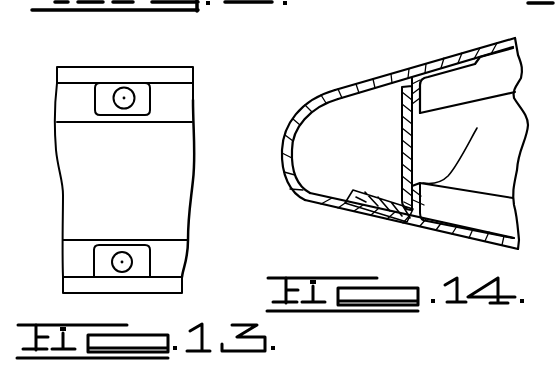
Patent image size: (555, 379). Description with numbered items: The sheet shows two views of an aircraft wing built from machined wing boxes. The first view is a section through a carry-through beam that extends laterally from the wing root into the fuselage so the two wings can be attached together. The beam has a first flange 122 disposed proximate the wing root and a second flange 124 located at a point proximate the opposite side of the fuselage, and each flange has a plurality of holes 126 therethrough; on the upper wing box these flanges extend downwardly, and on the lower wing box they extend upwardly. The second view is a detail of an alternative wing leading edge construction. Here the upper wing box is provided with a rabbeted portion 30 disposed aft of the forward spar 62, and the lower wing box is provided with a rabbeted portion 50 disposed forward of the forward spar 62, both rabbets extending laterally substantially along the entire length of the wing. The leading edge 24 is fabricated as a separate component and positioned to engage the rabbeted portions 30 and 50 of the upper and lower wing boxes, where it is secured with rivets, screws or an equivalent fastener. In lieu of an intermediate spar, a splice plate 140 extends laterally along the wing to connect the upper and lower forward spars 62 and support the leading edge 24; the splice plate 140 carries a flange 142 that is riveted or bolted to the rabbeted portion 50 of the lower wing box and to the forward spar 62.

In FIG. 13, the first flange 122 is at (142, 95).
In FIG. 13, the holes 126 is at (126, 105).
In FIG. 13, the second flange 124 is at (147, 250).
In FIG. 14, the rabbeted portion 30 is at (438, 72).
In FIG. 14, the leading edge 24 is at (287, 127).
In FIG. 14, the rabbeted portion 50 is at (367, 216).
In FIG. 14, the splice plate 140 is at (398, 128).
In FIG. 14, the splice plate flange 142 is at (370, 190).
In FIG. 14, the forward spar 62 is at (413, 117).